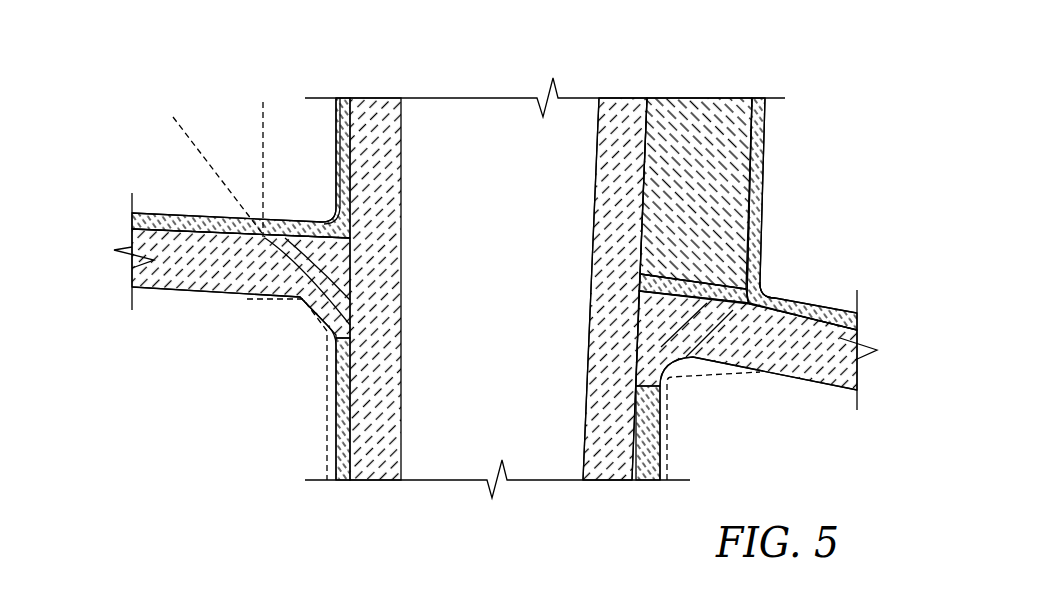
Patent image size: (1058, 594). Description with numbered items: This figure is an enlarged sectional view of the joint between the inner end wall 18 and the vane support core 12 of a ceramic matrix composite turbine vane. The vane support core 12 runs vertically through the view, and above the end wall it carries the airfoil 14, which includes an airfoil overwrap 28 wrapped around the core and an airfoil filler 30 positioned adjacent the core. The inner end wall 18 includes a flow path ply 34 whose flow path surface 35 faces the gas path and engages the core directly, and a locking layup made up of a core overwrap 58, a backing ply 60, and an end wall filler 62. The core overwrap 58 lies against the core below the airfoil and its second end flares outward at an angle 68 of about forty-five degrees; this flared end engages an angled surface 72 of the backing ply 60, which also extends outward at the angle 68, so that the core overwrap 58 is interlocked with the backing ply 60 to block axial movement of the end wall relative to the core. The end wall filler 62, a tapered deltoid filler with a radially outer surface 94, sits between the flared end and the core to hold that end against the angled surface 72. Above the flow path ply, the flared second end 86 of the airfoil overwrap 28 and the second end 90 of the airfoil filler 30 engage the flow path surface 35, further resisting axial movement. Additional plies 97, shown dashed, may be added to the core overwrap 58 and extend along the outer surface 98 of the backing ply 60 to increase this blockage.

The vane support core 12 is at (378, 104).
The airfoil 14 is at (872, 166).
The inner end wall 18 is at (176, 328).
The airfoil overwrap 28 is at (757, 175).
The airfoil filler 30 is at (733, 211).
The flow path ply 34 is at (124, 221).
The flow path surface 35 is at (180, 213).
The core overwrap 58 is at (345, 472).
The backing ply 60 is at (133, 282).
The end wall filler 62 is at (345, 250).
The angle 68 is at (256, 147).
The angled surface 72 is at (297, 238).
The second end of airfoil overwrap 86 is at (785, 275).
The second end of airfoil filler 90 is at (697, 293).
The radially outer surface 94 is at (312, 282).
The additional plies 97 is at (326, 432).
The outer surface of backing ply 98 is at (777, 375).